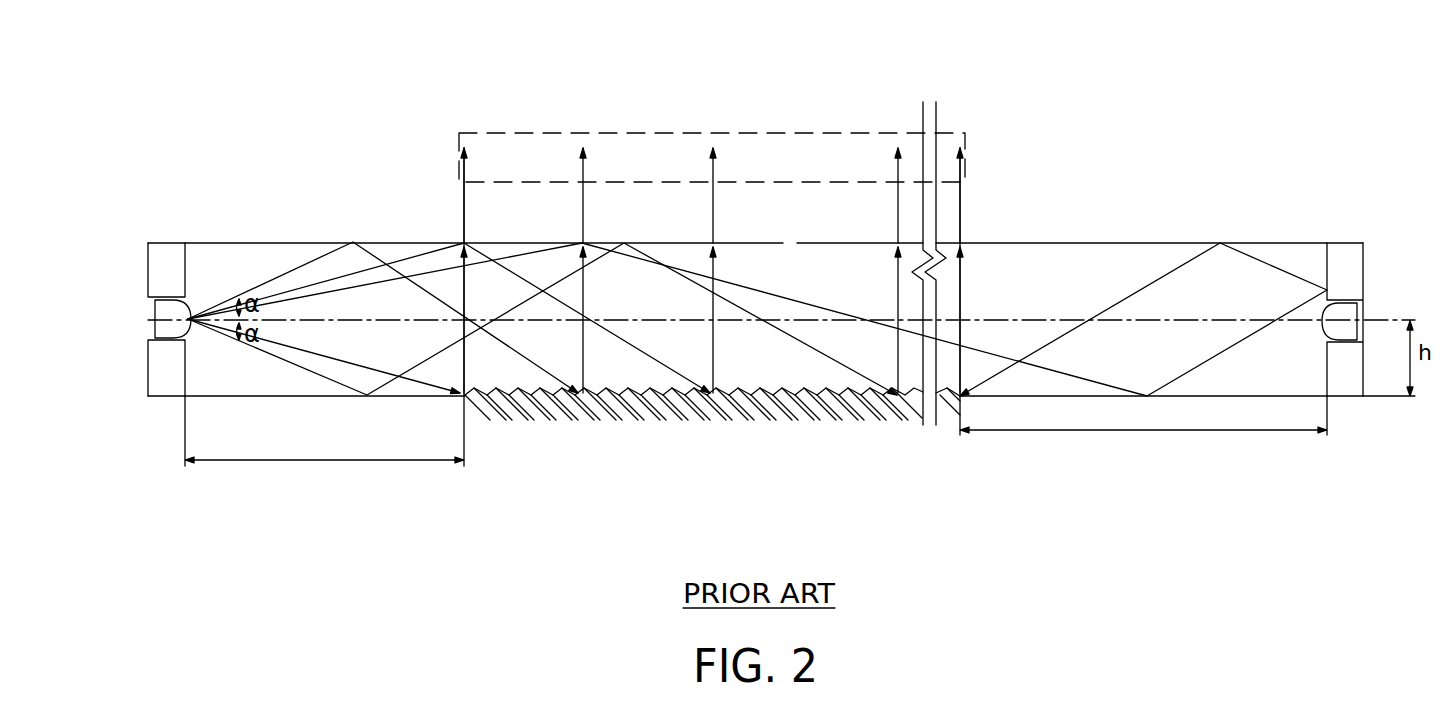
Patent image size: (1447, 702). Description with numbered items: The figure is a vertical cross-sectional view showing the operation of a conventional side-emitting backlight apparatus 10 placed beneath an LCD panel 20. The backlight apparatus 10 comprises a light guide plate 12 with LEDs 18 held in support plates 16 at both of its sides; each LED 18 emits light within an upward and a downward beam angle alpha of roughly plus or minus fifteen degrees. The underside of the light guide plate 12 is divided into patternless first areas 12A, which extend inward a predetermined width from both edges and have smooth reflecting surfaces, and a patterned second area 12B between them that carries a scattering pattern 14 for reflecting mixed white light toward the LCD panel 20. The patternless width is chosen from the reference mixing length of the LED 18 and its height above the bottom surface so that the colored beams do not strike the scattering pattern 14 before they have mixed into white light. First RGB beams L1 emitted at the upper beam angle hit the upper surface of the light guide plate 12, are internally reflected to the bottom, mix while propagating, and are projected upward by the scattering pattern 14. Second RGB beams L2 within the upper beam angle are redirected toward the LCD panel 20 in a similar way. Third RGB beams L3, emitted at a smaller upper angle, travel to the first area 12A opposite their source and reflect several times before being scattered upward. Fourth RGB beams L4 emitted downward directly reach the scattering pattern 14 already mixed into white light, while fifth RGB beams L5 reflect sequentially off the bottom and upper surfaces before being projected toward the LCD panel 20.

The side-emitting backlight apparatus 10 is at (1057, 84).
The light guide plate 12 is at (1103, 280).
The patternless first area 12A is at (270, 415).
The patterned second area 12B is at (700, 443).
The scattering pattern 14 is at (766, 398).
The support plate 16 is at (157, 377).
The LED 18 is at (163, 317).
The LCD panel 20 is at (553, 140).
The first RGB beams L1 is at (260, 284).
The second RGB beams L2 is at (393, 262).
The third RGB beams L3 is at (442, 268).
The fourth RGB beams L4 is at (440, 390).
The fifth RGB beams L5 is at (275, 357).